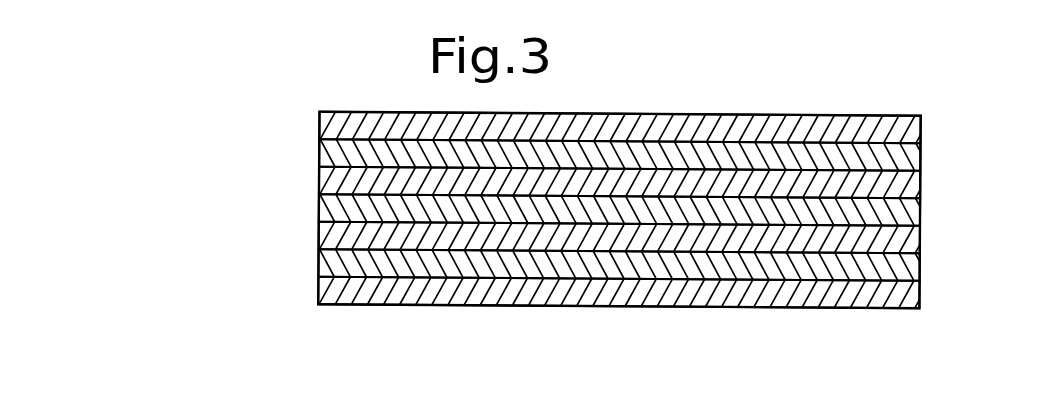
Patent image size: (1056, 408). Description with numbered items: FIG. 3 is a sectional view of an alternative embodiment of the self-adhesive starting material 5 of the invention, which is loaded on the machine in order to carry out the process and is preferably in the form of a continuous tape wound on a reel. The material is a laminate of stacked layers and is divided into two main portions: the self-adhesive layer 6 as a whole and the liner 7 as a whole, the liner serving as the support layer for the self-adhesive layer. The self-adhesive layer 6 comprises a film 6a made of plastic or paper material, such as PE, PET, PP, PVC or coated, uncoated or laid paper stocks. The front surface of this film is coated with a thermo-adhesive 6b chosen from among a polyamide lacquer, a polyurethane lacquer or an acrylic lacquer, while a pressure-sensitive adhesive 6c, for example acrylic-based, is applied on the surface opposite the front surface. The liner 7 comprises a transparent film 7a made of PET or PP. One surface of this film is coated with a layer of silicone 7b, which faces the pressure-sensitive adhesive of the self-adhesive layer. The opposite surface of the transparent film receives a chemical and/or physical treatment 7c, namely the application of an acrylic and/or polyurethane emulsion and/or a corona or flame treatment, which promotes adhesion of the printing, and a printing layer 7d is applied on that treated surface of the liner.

The self-adhesive starting material 5 is at (310, 304).
The self-adhesive layer 6 is at (930, 199).
The film 6a is at (817, 157).
The thermo-adhesive 6b is at (872, 133).
The pressure-sensitive adhesive 6c is at (778, 187).
The liner 7 is at (930, 310).
The transparent film 7a is at (843, 240).
The layer of silicone 7b is at (689, 210).
The chemical and/or physical treatment 7c is at (792, 268).
The printing layer 7d is at (737, 291).